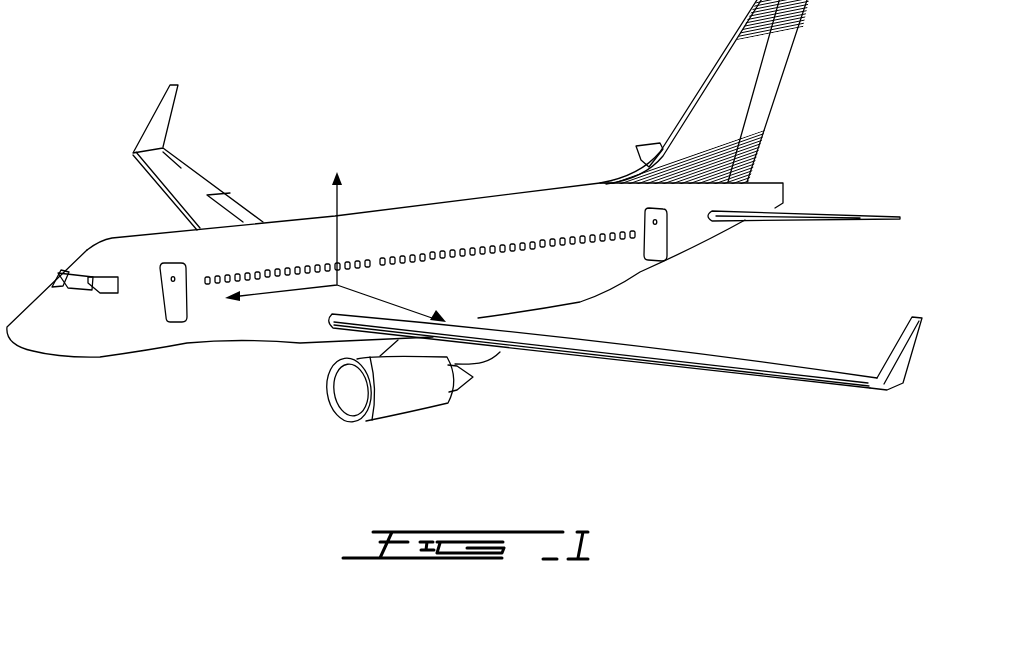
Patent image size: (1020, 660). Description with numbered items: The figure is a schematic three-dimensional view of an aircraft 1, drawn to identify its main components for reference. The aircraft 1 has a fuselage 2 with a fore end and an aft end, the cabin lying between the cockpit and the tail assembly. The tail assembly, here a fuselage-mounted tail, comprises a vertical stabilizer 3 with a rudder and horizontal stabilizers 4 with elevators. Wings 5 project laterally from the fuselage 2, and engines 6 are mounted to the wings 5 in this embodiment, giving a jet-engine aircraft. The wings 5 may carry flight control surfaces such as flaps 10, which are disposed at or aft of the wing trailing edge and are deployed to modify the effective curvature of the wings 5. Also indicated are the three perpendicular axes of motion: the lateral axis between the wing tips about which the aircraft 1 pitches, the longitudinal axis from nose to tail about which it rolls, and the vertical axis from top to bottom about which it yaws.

The aircraft 1 is at (388, 147).
The fuselage 2 is at (187, 338).
The vertical stabilizer 3 is at (727, 82).
The horizontal stabilizers 4 is at (648, 150).
The wings 5 is at (168, 177).
The engines 6 is at (428, 400).
The flaps 10 is at (218, 170).